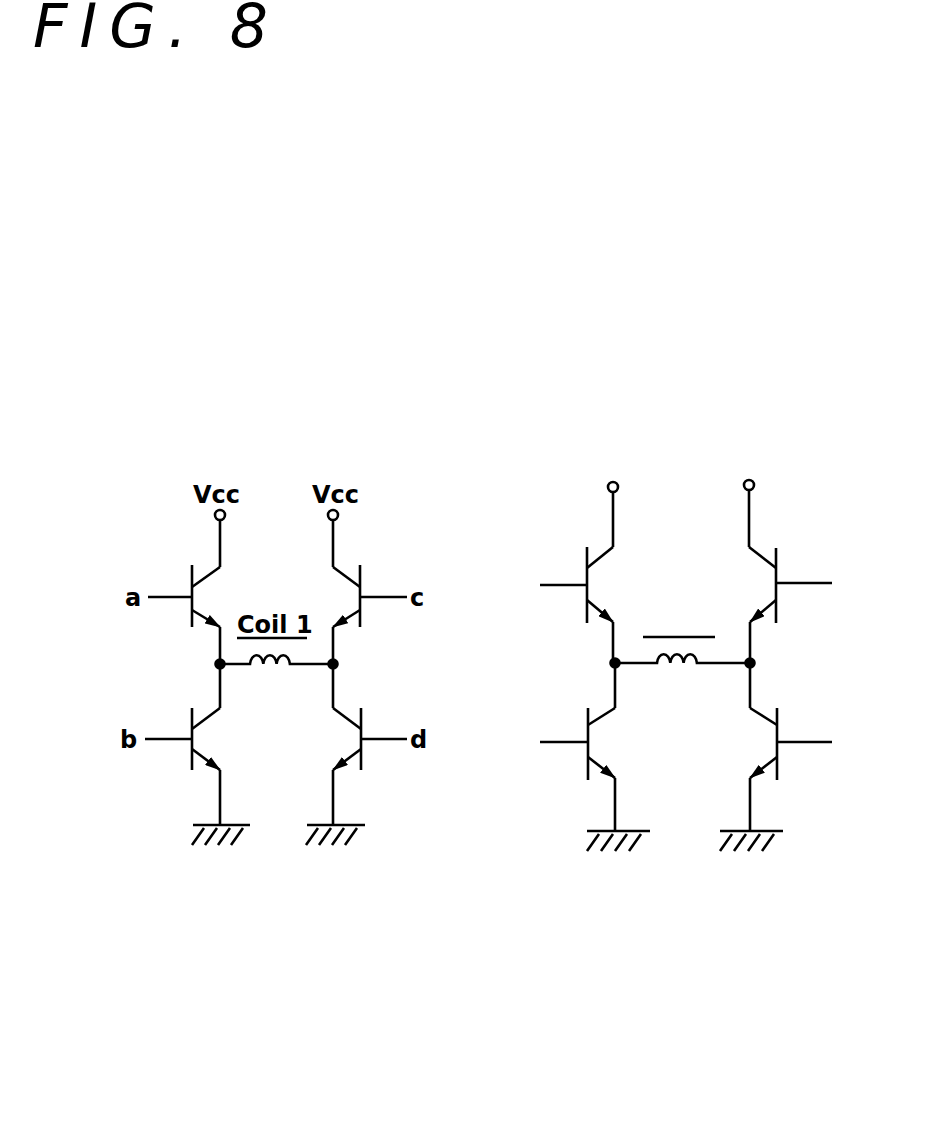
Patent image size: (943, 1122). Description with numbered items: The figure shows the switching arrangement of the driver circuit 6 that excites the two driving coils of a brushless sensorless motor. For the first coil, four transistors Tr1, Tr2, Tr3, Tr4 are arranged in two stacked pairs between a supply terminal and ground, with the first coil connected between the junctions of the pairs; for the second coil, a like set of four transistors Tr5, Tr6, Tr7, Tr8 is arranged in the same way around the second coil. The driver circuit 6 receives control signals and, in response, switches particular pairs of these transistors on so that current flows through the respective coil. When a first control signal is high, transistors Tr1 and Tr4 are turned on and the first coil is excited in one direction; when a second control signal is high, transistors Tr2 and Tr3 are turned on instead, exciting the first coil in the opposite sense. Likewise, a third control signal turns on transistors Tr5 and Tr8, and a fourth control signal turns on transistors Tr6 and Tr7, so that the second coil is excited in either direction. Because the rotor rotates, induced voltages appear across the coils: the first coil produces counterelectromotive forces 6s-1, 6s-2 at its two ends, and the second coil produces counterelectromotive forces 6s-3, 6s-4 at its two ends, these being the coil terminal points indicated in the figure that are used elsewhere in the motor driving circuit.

The driver circuit 6 is at (795, 391).
The counterelectromotive force 6s-1 is at (238, 668).
The counterelectromotive force 6s-2 is at (310, 668).
The counterelectromotive force 6s-3 is at (632, 668).
The counterelectromotive force 6s-4 is at (717, 668).
The transistor Tr1 is at (173, 603).
The transistor Tr2 is at (187, 754).
The transistor Tr3 is at (372, 603).
The transistor Tr4 is at (360, 754).
The transistor Tr5 is at (576, 594).
The transistor Tr6 is at (595, 757).
The transistor Tr7 is at (790, 594).
The transistor Tr8 is at (776, 757).